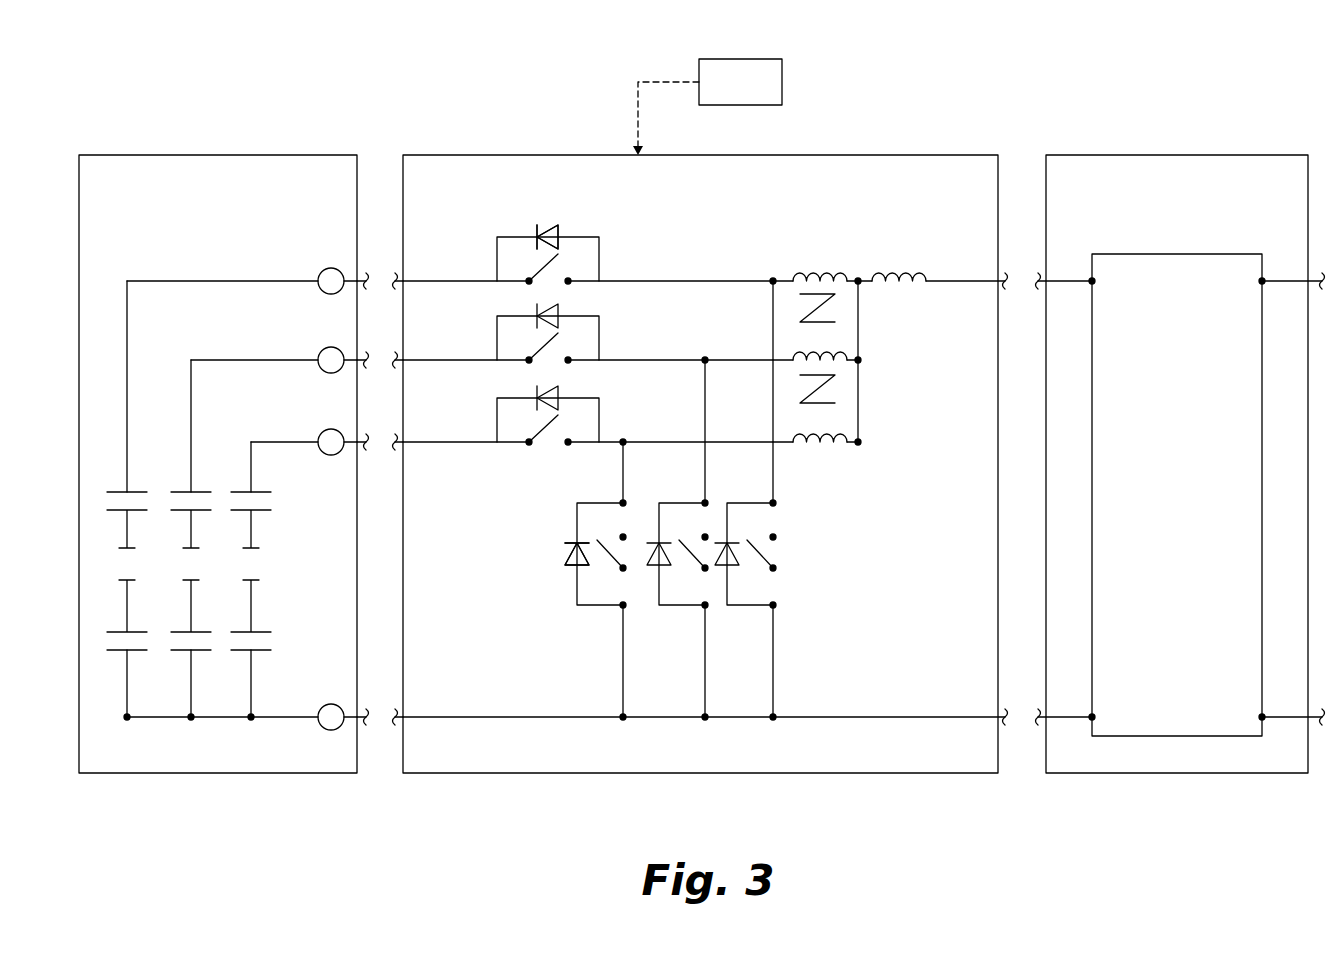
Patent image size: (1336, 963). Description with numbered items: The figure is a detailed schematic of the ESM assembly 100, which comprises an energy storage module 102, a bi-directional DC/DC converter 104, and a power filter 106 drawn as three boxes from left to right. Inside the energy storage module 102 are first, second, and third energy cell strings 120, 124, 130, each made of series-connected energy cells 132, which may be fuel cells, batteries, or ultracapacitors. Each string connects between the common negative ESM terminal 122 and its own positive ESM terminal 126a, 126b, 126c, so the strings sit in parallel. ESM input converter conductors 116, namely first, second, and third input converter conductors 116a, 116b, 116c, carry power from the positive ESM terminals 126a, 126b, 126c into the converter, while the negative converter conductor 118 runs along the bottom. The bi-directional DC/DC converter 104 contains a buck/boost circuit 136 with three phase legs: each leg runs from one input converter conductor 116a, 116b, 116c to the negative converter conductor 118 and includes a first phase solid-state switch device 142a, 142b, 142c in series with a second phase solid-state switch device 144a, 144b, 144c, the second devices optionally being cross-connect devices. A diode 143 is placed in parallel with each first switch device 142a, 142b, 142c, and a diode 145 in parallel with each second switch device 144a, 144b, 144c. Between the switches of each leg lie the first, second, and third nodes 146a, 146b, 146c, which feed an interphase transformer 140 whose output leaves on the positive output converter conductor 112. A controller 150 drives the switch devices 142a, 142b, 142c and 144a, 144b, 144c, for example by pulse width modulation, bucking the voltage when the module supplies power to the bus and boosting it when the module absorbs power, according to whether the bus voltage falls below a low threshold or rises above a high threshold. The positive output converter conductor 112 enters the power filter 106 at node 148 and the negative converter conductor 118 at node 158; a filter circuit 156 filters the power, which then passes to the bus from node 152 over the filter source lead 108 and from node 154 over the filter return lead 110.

The ESM assembly 100 is at (168, 53).
The energy storage module 102 is at (304, 154).
The bi-directional DC/DC converter 104 is at (917, 155).
The power filter 106 is at (1259, 155).
The filter source lead 108 is at (1283, 278).
The filter return lead 110 is at (1285, 715).
The positive output converter conductor 112 is at (966, 278).
The ESM input converter conductors 116 is at (374, 226).
The first input converter conductor 116a is at (443, 279).
The second input converter conductor 116b is at (443, 359).
The third input converter conductor 116c is at (443, 441).
The negative converter conductor 118 is at (497, 717).
The first energy cell string 120 is at (103, 671).
The negative ESM terminal 122 is at (331, 704).
The second energy cell string 124 is at (170, 667).
The first positive ESM terminal 126a is at (327, 268).
The second positive ESM terminal 126b is at (327, 347).
The third positive ESM terminal 126c is at (327, 429).
The third energy cell string 130 is at (228, 669).
The energy cells 132 is at (121, 492).
The buck/boost circuit 136 is at (600, 605).
The interphase transformer 140 is at (820, 458).
The first phase solid-state switch device 142a is at (589, 237).
The first phase solid-state switch device 142b is at (612, 348).
The first phase solid-state switch device 142c is at (612, 422).
The diode 143 is at (564, 235).
The second phase solid-state switch device 144a is at (726, 574).
The second phase solid-state switch device 144b is at (654, 574).
The second phase solid-state switch device 144c is at (572, 608).
The diode 145 is at (574, 574).
The first node 146a is at (773, 278).
The second node 146b is at (706, 358).
The third node 146c is at (627, 445).
The node 148 is at (1092, 282).
The controller 150 is at (783, 106).
The node 152 is at (1264, 284).
The node 154 is at (1264, 720).
The filter circuit 156 is at (1211, 254).
The node 158 is at (1092, 719).